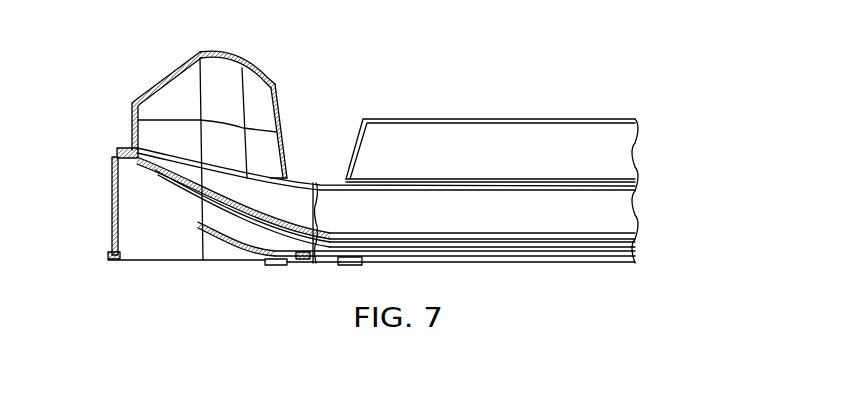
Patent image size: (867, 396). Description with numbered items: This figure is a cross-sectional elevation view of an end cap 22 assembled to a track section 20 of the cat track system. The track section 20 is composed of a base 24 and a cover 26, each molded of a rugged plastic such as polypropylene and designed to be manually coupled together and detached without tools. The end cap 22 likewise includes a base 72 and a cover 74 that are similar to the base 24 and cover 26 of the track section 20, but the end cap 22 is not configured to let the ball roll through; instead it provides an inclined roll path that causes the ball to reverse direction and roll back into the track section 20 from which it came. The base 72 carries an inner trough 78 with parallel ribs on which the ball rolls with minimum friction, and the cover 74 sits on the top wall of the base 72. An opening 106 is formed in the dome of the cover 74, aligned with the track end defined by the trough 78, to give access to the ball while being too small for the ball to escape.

The track section 20 is at (415, 163).
The end cap 22 is at (226, 139).
The base 24 is at (615, 213).
The cover 26 is at (592, 135).
The base 72 is at (172, 240).
The cover 74 is at (247, 63).
The inner trough 78 is at (268, 222).
The opening 106 is at (172, 79).